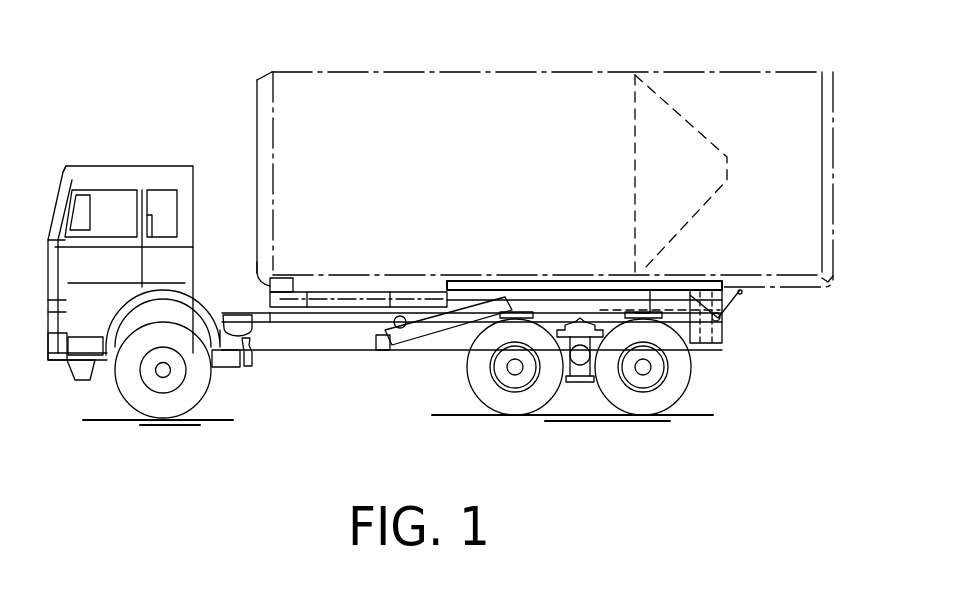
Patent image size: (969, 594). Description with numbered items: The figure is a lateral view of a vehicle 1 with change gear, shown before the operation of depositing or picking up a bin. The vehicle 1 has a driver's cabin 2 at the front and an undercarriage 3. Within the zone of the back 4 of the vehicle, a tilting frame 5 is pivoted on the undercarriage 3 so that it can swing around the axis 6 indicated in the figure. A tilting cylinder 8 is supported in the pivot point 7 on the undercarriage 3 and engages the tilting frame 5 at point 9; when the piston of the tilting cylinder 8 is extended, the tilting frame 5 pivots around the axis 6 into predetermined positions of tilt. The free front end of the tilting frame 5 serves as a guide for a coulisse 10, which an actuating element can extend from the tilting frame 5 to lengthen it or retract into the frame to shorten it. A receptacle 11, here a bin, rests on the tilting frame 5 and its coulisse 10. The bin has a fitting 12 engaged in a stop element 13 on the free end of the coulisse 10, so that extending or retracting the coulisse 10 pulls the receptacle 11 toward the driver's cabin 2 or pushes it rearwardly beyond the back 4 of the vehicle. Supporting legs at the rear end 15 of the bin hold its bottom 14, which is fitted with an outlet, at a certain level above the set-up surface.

The vehicle 1 is at (296, 396).
The driver's cabin 2 is at (115, 213).
The undercarriage 3 is at (457, 337).
The back of the vehicle 4 is at (742, 318).
The tilting frame 5 is at (584, 295).
The axis 6 is at (726, 322).
The pivot point 7 is at (377, 340).
The tilting cylinder 8 is at (428, 328).
The point 9 is at (512, 300).
The coulisse 10 is at (355, 303).
The receptacle 11 is at (392, 105).
The fitting 12 is at (270, 278).
The stop element 13 is at (270, 322).
The bottom 14 is at (655, 128).
The rear end 15 is at (826, 282).